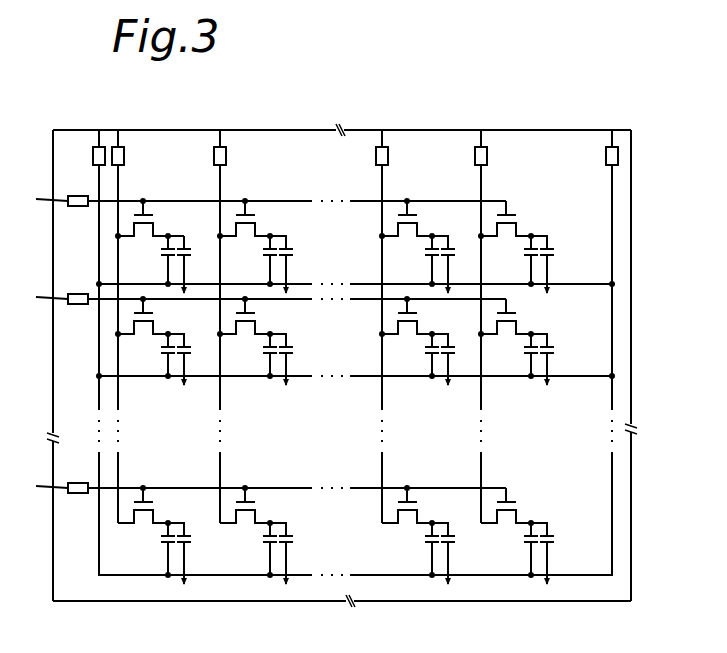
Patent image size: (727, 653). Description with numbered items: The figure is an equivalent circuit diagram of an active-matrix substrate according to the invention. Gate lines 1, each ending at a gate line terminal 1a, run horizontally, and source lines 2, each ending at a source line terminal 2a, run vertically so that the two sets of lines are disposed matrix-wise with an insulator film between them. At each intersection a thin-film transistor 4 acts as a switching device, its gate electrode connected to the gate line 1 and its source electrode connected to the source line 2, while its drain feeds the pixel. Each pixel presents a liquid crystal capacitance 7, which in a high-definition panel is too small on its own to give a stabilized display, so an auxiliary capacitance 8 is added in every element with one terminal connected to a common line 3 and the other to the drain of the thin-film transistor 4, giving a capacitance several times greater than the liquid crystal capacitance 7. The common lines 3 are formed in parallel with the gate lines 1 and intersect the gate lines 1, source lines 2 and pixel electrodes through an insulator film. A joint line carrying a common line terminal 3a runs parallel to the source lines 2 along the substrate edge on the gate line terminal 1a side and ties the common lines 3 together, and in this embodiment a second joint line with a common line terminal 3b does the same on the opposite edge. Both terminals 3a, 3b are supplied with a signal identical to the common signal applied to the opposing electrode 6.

The gate line 1 is at (283, 201).
The gate line terminal 1a is at (50, 342).
The source line 2 is at (222, 185).
The source line terminal 2a is at (119, 140).
The common line 3 is at (609, 220).
The common line terminal 3a is at (99, 140).
The common line terminal 3b is at (611, 140).
The thin-film transistor 4 is at (155, 213).
The opposing electrode 6 is at (186, 289).
The liquid crystal capacitance 7 is at (198, 248).
The auxiliary capacitance 8 is at (155, 258).